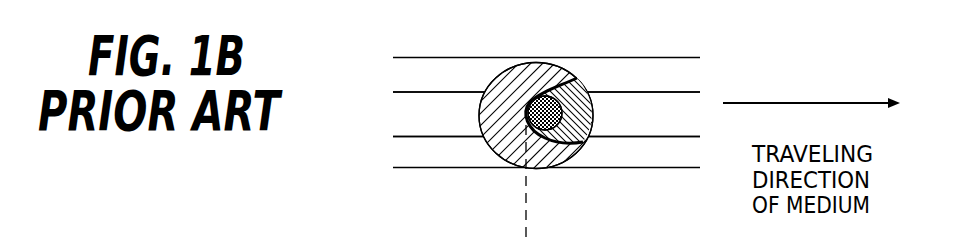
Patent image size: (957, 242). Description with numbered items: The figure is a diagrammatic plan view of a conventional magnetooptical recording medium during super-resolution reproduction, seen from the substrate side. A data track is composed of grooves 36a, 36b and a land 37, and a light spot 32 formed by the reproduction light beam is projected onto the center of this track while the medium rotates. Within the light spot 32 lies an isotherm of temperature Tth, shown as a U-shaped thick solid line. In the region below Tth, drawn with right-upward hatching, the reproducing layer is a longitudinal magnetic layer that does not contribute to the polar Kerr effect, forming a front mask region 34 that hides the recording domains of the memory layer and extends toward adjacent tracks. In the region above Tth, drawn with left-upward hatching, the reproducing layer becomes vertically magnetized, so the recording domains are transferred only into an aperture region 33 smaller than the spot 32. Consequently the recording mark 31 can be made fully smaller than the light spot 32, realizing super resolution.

The recording mark 31 is at (588, 100).
The light spot 32 is at (488, 72).
The aperture region 33 is at (587, 141).
The front mask region 34 is at (496, 160).
The groove 36a is at (403, 78).
The groove 36b is at (403, 160).
The land 37 is at (397, 120).
The threshold temperature isotherm Tth is at (566, 148).